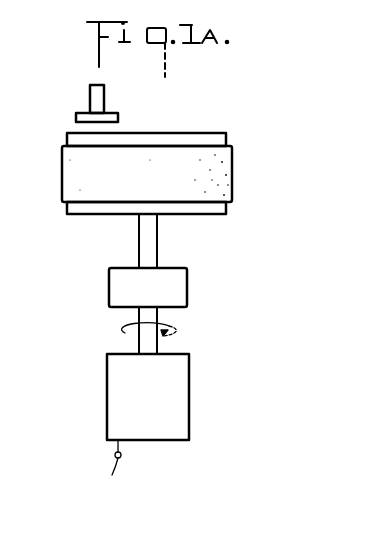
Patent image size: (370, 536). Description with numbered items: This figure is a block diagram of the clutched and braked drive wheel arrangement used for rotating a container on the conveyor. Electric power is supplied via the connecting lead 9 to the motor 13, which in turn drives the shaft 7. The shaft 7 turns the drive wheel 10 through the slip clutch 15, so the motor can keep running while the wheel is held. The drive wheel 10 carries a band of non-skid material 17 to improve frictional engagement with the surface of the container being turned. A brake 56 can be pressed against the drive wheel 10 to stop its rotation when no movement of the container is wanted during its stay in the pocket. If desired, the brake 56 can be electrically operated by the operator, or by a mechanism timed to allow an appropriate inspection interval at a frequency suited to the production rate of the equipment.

The brake 56 is at (88, 102).
The drive wheel 10 is at (68, 215).
The band of non-skid material 17 is at (62, 178).
The shaft 7 is at (138, 315).
The slip clutch 15 is at (109, 287).
The motor 13 is at (189, 393).
The connecting lead 9 is at (122, 456).